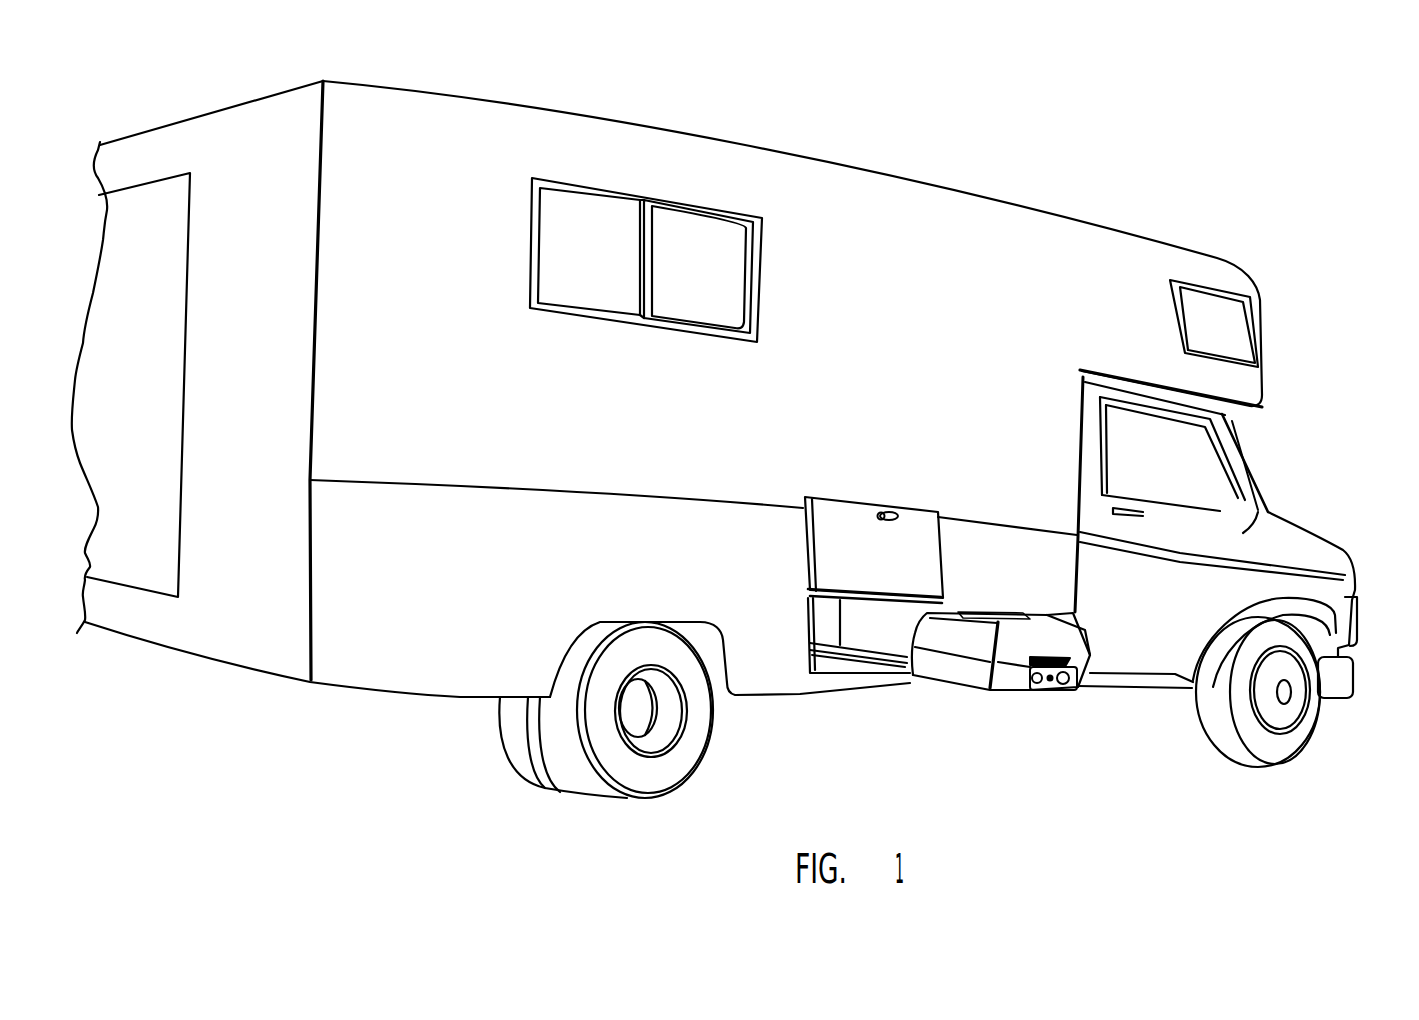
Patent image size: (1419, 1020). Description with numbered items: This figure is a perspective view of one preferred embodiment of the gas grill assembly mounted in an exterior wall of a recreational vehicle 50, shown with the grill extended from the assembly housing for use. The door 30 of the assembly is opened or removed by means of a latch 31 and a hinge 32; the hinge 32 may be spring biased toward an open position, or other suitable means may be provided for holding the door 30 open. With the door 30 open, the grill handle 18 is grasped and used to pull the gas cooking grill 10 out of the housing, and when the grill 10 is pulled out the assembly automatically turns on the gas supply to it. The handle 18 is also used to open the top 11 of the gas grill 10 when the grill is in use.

The gas cooking grill 10 is at (980, 676).
The top 11 is at (1052, 630).
The grill handle 18 is at (1060, 648).
The door 30 is at (832, 560).
The latch 31 is at (889, 510).
The hinge 32 is at (950, 598).
The recreational vehicle 50 is at (548, 396).